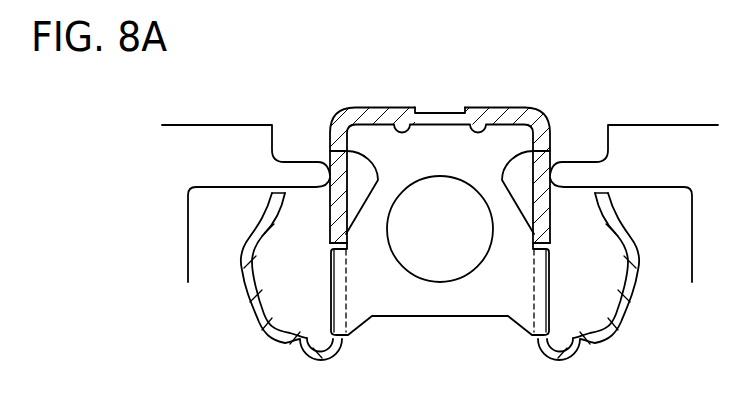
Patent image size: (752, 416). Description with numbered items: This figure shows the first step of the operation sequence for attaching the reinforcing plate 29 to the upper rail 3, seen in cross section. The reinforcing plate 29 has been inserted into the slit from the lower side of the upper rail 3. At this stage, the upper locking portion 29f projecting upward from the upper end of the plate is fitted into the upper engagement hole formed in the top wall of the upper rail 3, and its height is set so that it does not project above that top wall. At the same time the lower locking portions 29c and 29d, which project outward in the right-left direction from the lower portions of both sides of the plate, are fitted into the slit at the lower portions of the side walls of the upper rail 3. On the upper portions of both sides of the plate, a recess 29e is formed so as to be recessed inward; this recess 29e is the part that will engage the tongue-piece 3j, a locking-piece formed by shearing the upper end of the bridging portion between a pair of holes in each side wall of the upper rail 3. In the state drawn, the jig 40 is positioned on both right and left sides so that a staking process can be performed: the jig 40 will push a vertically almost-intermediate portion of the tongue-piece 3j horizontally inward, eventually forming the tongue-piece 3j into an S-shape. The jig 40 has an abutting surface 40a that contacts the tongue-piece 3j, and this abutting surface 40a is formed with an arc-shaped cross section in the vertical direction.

The upper rail 3 is at (388, 120).
The tongue-piece 3j is at (343, 207).
The reinforcing plate 29 is at (437, 304).
The lower locking portion 29c is at (547, 303).
The lower locking portion 29d is at (333, 303).
The recess 29e is at (359, 198).
The upper locking portion 29f is at (440, 125).
The jig 40 is at (224, 133).
The abutting surface 40a is at (332, 170).